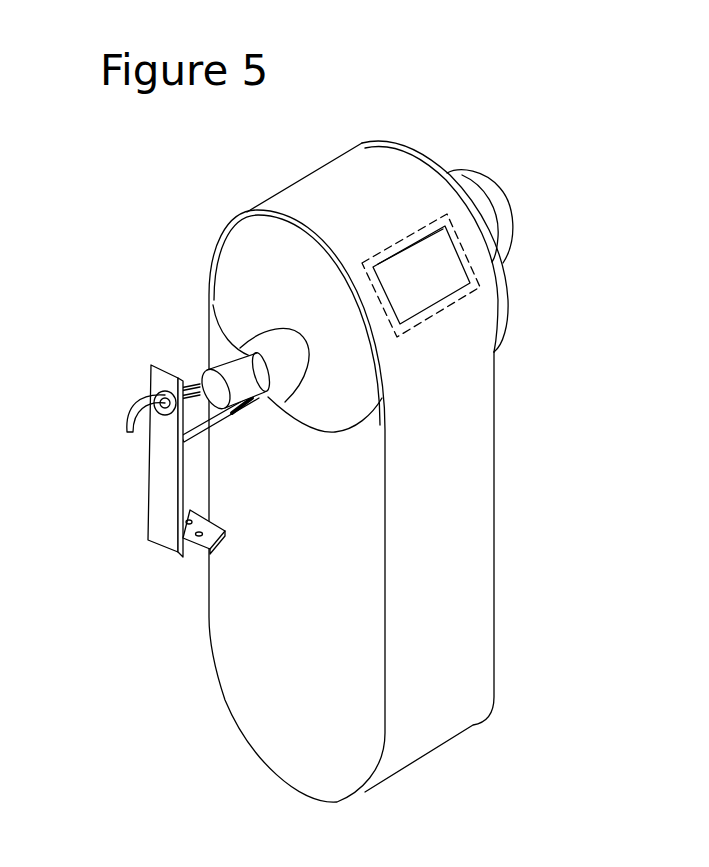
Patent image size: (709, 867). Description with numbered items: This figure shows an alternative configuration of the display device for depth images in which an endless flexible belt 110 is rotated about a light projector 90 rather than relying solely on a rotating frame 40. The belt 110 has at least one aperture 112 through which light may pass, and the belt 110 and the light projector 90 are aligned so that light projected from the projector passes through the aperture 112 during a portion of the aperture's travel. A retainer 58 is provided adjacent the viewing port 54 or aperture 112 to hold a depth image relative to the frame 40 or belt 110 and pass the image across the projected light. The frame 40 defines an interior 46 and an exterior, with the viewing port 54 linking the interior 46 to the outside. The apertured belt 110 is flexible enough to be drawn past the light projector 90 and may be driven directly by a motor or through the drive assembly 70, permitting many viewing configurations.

The rotatable frame 40 is at (398, 138).
The interior 46 is at (357, 400).
The viewing port 54 is at (478, 268).
The retainer 58 is at (438, 322).
The drive assembly 70 is at (496, 188).
The light projector 90 is at (204, 366).
The flexible belt 110 is at (500, 517).
The aperture 112 is at (403, 256).